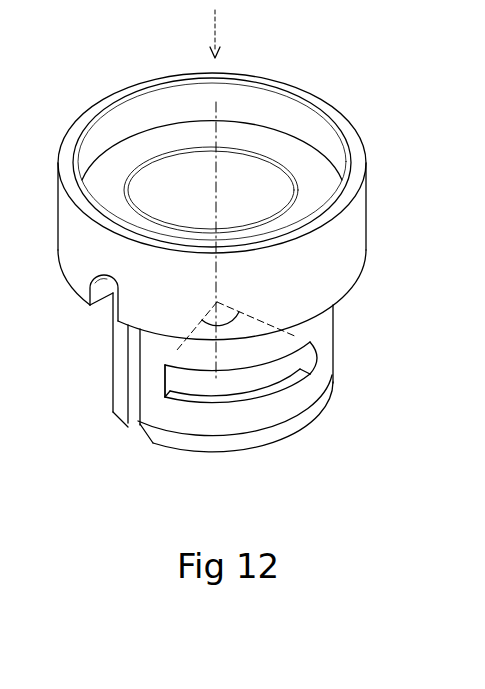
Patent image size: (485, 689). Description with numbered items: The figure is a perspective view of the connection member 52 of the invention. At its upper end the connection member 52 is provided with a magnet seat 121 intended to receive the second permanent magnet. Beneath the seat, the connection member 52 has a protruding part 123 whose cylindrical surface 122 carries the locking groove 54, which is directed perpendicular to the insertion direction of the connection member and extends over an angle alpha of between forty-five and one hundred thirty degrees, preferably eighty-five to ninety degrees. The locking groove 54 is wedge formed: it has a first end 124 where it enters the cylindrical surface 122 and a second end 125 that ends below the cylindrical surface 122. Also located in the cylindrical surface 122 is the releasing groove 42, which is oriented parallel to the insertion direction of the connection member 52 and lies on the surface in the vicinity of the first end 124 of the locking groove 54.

The connection member 52 is at (235, 269).
The magnet seat 121 is at (284, 148).
The cylindrical surface 122 is at (320, 332).
The protruding part 123 is at (275, 452).
The first end 124 is at (176, 342).
The second end 125 is at (305, 359).
The locking groove 54 is at (260, 376).
The releasing groove 42 is at (132, 373).